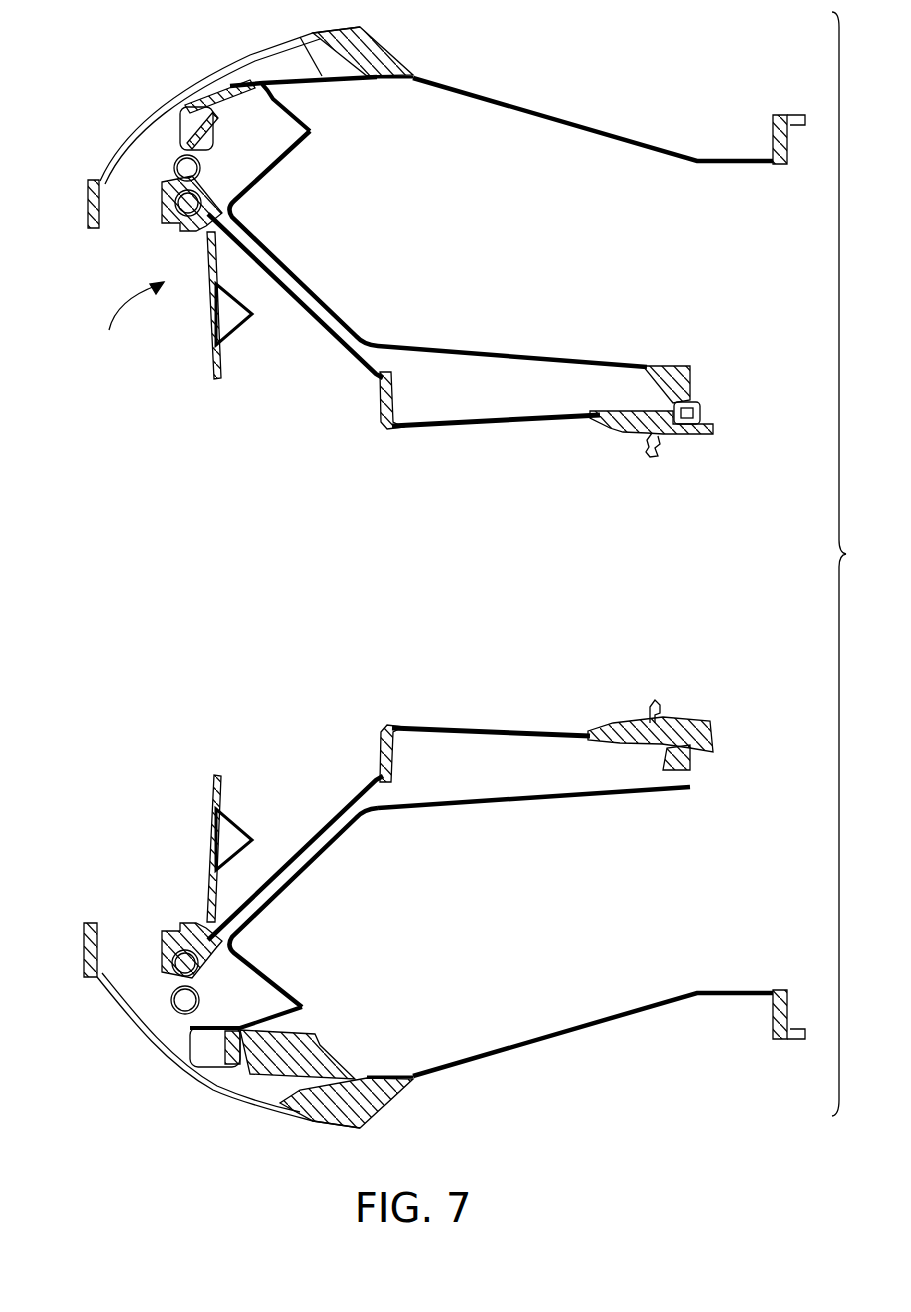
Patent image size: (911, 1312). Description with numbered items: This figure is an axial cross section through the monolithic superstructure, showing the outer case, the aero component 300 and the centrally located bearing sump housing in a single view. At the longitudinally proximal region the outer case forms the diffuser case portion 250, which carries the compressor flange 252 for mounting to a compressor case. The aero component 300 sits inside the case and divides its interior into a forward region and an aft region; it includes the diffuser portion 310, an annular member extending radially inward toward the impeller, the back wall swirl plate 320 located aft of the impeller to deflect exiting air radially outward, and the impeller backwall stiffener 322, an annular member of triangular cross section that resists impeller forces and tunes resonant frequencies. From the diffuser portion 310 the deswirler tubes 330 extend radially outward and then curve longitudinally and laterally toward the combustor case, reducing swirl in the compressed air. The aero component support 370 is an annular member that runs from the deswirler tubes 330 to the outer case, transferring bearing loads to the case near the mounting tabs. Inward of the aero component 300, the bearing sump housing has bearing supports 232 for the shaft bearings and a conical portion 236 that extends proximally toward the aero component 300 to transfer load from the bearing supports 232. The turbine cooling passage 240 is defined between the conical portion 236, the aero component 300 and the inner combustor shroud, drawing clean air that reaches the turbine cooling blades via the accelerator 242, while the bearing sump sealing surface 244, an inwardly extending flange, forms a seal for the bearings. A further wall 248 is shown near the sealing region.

The bearing supports 232 is at (390, 725).
The conical portion 236 is at (358, 368).
The turbine cooling passage 240 is at (243, 143).
The accelerator 242 is at (702, 412).
The bearing sump sealing surface 244 is at (661, 447).
The outer wall of duct 248 is at (467, 347).
The diffuser case portion 250 is at (113, 154).
The compressor flange 252 is at (86, 196).
The aero component 300 is at (130, 319).
The diffuser portion 310 is at (162, 217).
The back wall swirl plate 320 is at (210, 347).
The impeller backwall stiffener 322 is at (240, 334).
The deswirler tubes 330 is at (181, 108).
The aero component support 370 is at (298, 34).